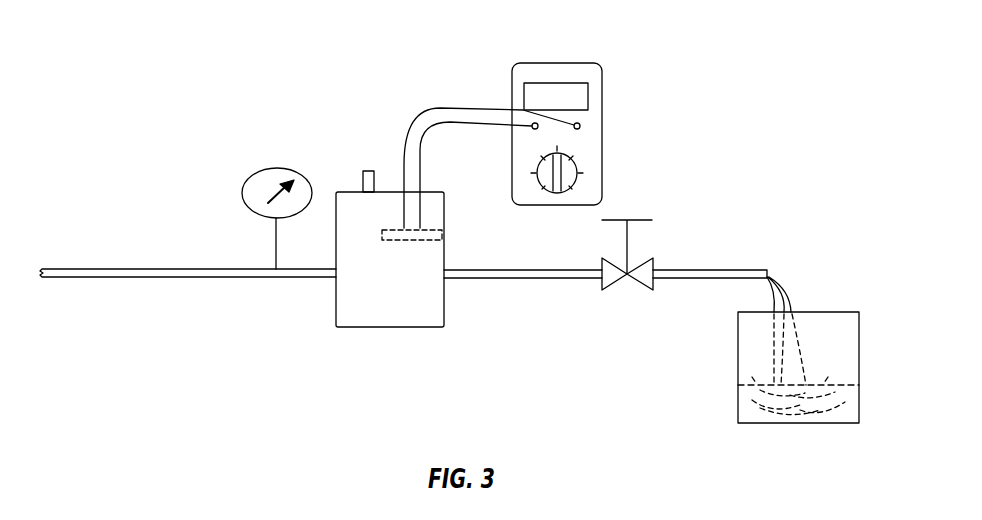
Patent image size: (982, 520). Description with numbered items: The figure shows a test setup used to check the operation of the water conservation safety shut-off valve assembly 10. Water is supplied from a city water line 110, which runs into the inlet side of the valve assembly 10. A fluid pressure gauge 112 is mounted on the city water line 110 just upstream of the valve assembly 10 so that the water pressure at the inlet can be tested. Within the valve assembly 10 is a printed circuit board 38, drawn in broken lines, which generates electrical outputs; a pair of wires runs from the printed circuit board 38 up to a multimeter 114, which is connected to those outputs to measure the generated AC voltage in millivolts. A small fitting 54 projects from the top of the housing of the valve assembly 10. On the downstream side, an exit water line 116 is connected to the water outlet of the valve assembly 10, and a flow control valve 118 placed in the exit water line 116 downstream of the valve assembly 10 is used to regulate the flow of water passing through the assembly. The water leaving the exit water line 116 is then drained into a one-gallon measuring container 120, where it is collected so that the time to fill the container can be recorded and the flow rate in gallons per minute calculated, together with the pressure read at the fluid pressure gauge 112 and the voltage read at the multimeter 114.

The valve assembly 10 is at (356, 327).
The printed circuit board 38 is at (428, 231).
The fitting 54 is at (366, 171).
The city water line 110 is at (160, 268).
The fluid pressure gauge 112 is at (262, 171).
The multimeter 114 is at (578, 63).
The exit water line 116 is at (535, 282).
The flow control valve 118 is at (640, 220).
The measuring container 120 is at (822, 312).